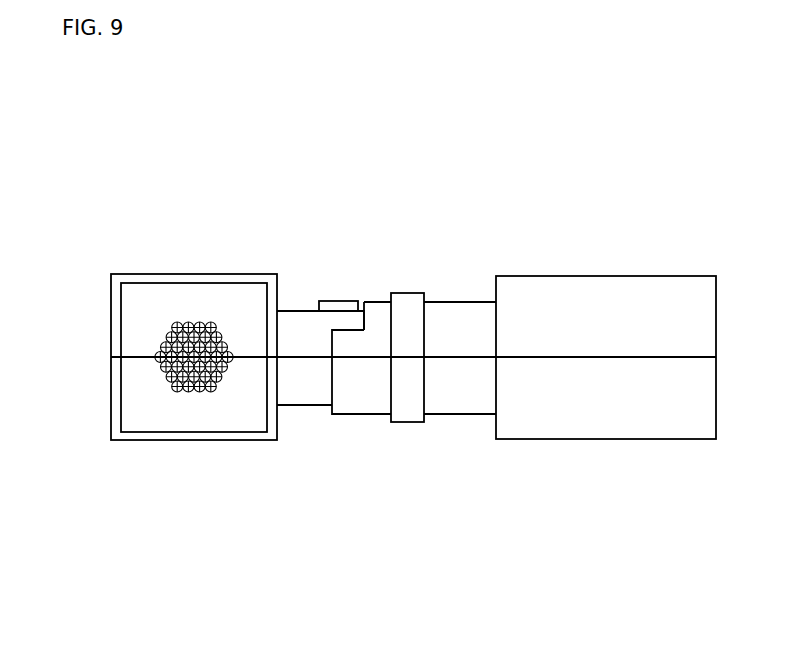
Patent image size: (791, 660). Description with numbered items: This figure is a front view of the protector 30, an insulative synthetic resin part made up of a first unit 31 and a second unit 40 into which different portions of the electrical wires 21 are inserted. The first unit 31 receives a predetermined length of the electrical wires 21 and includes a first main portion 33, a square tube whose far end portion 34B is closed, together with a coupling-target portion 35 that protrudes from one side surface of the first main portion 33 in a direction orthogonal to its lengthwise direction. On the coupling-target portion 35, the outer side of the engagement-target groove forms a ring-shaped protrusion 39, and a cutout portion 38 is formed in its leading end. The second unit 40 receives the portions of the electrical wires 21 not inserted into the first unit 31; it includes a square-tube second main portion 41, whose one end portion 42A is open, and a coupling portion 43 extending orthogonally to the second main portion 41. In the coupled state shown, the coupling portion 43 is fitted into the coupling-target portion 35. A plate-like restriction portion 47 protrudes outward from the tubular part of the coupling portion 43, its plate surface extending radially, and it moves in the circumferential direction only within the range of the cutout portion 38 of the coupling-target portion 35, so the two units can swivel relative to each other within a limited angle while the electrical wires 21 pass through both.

The electrical wires 21 is at (177, 391).
The protector 30 is at (431, 544).
The first unit 31 is at (526, 192).
The first main portion 33 is at (545, 307).
The other end portion 34B is at (670, 290).
The coupling-target portion 35 is at (462, 317).
The cutout portion 38 is at (350, 331).
The ring-shaped protrusion 39 is at (407, 305).
The second unit 40 is at (233, 141).
The second main portion 41 is at (237, 287).
The one end portion 42A is at (125, 440).
The coupling portion 43 is at (302, 328).
The restriction portion 47 is at (342, 307).